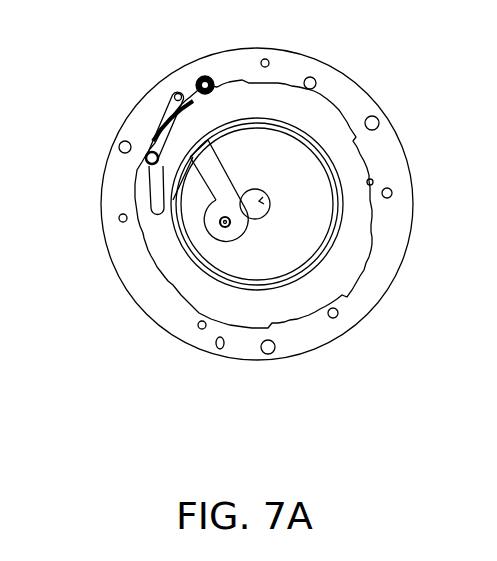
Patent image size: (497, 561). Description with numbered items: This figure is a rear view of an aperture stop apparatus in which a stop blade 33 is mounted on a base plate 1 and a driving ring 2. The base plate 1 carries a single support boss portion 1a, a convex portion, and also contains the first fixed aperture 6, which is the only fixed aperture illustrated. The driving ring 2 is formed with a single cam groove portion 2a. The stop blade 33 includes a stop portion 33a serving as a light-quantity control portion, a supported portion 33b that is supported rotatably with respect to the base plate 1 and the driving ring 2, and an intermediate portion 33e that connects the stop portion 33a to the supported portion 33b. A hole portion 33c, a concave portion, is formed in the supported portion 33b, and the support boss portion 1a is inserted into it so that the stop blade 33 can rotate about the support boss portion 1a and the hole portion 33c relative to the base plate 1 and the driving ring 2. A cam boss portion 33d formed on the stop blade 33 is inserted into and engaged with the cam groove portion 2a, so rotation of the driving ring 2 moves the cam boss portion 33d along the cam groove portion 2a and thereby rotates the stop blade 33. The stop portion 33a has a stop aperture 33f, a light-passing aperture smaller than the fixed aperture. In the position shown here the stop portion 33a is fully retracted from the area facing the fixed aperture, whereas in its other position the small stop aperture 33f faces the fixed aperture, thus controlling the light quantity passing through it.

The base plate 1 is at (400, 148).
The support boss portion 1a is at (172, 92).
The driving ring 2 is at (340, 280).
The cam groove portion 2a is at (150, 187).
The first fixed aperture 6 is at (261, 200).
The stop blade 33 is at (190, 386).
The stop portion 33a is at (211, 237).
The supported portion 33b is at (162, 110).
The hole portion 33c is at (151, 81).
The cam boss portion 33d is at (146, 158).
The intermediate portion 33e is at (205, 183).
The stop aperture 33f is at (225, 224).